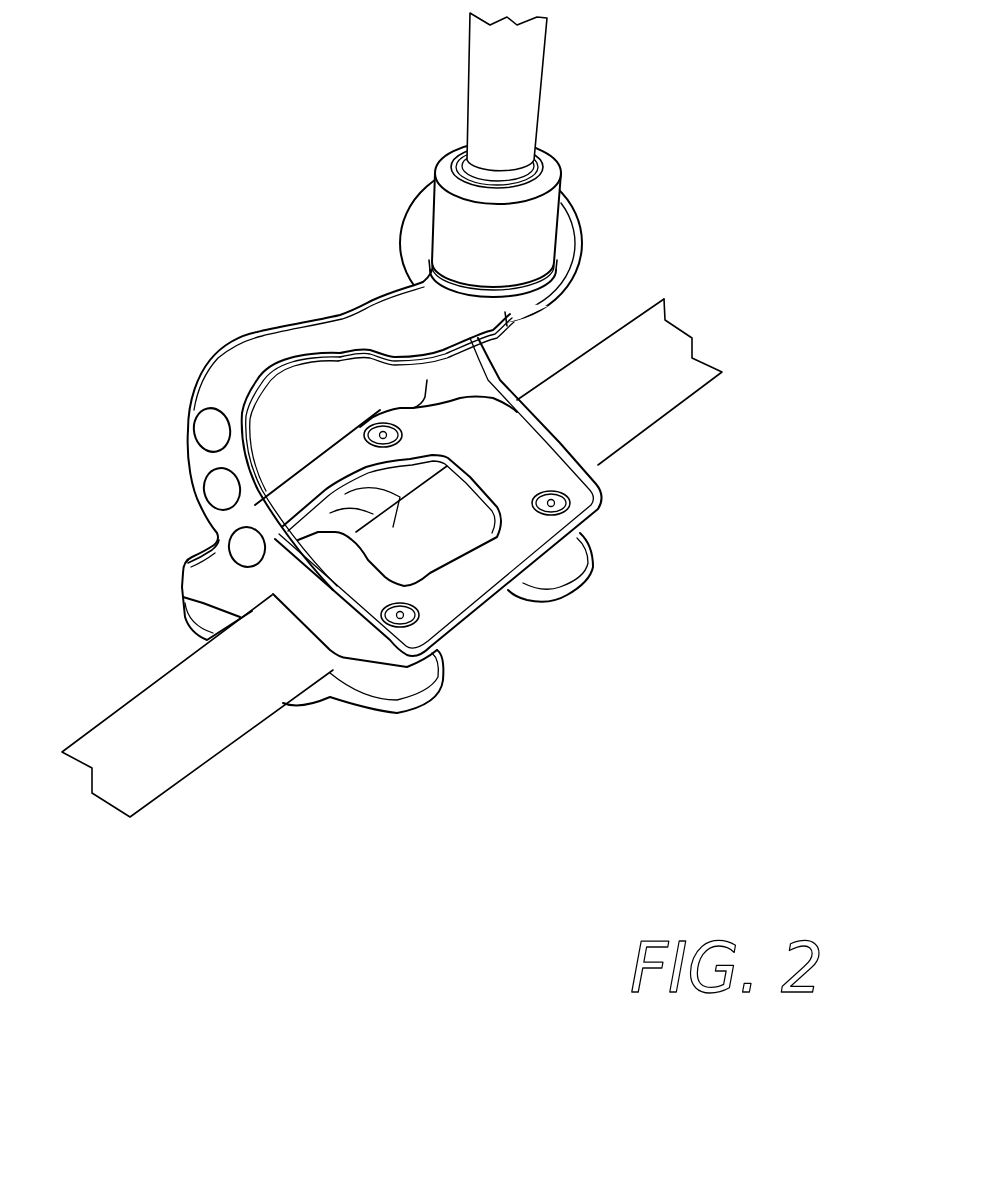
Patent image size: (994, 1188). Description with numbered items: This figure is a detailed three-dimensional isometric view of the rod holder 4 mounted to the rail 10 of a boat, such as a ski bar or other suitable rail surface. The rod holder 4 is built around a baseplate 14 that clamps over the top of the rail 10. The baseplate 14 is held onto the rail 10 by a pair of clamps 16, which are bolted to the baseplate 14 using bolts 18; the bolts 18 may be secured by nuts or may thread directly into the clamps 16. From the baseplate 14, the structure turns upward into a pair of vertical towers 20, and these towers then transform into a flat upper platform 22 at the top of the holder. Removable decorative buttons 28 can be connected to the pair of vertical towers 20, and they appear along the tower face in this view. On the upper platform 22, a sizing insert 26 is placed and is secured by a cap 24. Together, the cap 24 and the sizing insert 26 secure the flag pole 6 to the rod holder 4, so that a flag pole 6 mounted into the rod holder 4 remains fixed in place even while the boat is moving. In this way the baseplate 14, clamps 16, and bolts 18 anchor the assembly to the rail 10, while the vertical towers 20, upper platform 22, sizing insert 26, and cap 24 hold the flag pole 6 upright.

The rod holder 4 is at (215, 265).
The flag pole 6 is at (510, 110).
The rail 10 is at (172, 703).
The baseplate 14 is at (490, 597).
The clamps 16 is at (578, 582).
The bolts 18 is at (540, 490).
The vertical towers 20 is at (406, 212).
The upper platform 22 is at (428, 336).
The cap 24 is at (547, 235).
The sizing insert 26 is at (536, 153).
The decorative buttons 28 is at (247, 543).